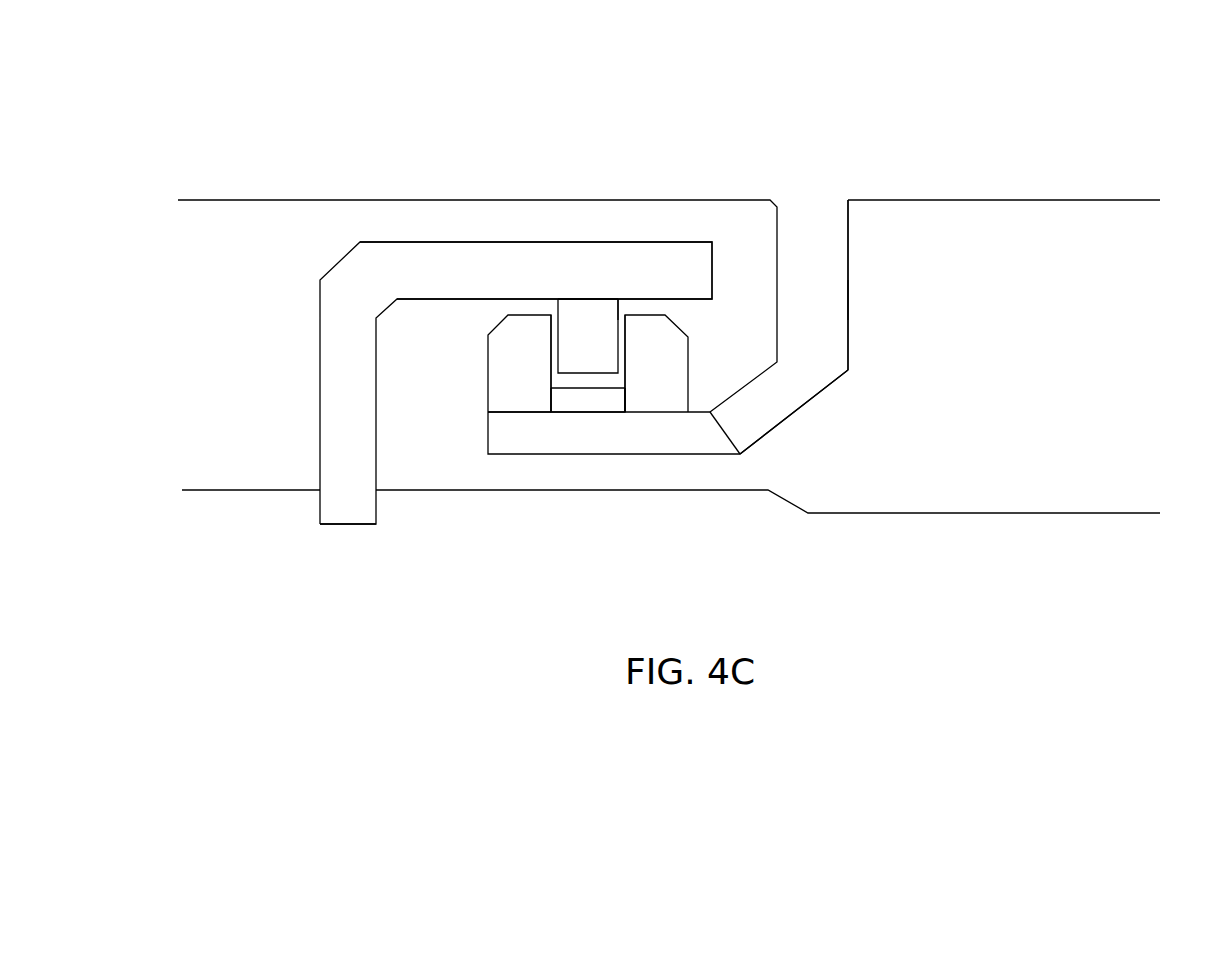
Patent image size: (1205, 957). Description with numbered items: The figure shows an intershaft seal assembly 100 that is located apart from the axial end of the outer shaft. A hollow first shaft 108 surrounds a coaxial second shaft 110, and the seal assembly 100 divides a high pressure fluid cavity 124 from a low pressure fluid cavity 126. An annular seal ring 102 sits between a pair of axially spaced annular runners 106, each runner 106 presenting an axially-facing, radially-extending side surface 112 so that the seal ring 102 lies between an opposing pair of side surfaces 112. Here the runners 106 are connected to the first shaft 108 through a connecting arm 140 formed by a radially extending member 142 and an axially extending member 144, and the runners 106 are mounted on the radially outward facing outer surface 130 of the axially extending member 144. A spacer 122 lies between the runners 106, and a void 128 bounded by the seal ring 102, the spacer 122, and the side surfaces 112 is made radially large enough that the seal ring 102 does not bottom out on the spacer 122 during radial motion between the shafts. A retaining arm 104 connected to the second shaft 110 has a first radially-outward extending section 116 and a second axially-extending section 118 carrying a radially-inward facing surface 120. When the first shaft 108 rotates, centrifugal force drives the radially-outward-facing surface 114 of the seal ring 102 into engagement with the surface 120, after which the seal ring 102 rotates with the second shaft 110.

The intershaft seal assembly 100 is at (294, 111).
The annular seal ring 102 is at (574, 357).
The retaining arm 104 is at (333, 420).
The annular runners 106 is at (501, 383).
The first shaft 108 is at (873, 127).
The second shaft 110 is at (941, 576).
The side surface 112 is at (548, 334).
The radially-outward-facing surface 114 is at (603, 304).
The first radially-outward extending section 116 is at (332, 451).
The second axially-extending section 118 is at (438, 262).
The radially-inward facing surface 120 is at (590, 298).
The spacer 122 is at (573, 412).
The high pressure fluid cavity 124 is at (190, 344).
The low pressure fluid cavity 126 is at (973, 378).
The void 128 is at (608, 380).
The outer surface 130 is at (515, 416).
The connecting arm 140 is at (852, 301).
The radially extending member 142 is at (835, 243).
The axially extending member 144 is at (712, 437).